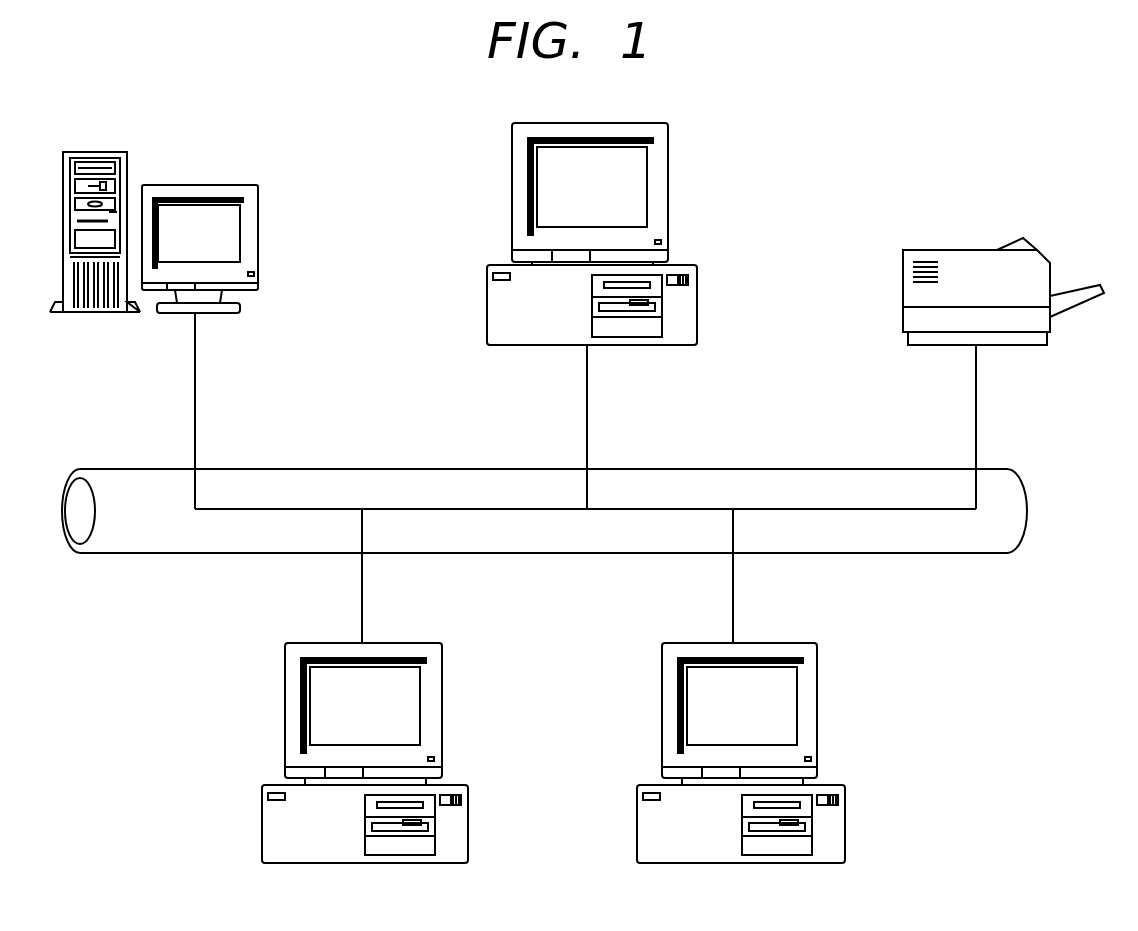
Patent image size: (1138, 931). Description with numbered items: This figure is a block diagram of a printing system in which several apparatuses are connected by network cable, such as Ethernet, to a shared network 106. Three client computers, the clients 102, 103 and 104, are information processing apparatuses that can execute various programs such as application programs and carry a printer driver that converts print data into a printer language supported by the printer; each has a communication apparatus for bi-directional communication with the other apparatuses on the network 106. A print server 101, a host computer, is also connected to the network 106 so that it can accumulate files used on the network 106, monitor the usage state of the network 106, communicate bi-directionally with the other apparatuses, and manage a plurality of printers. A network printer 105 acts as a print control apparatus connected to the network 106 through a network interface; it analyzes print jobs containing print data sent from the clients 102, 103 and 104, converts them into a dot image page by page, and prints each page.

The print server 101 is at (213, 185).
The client 102 is at (670, 155).
The client 103 is at (262, 815).
The client 104 is at (845, 810).
The network printer 105 is at (930, 250).
The network 106 is at (630, 469).